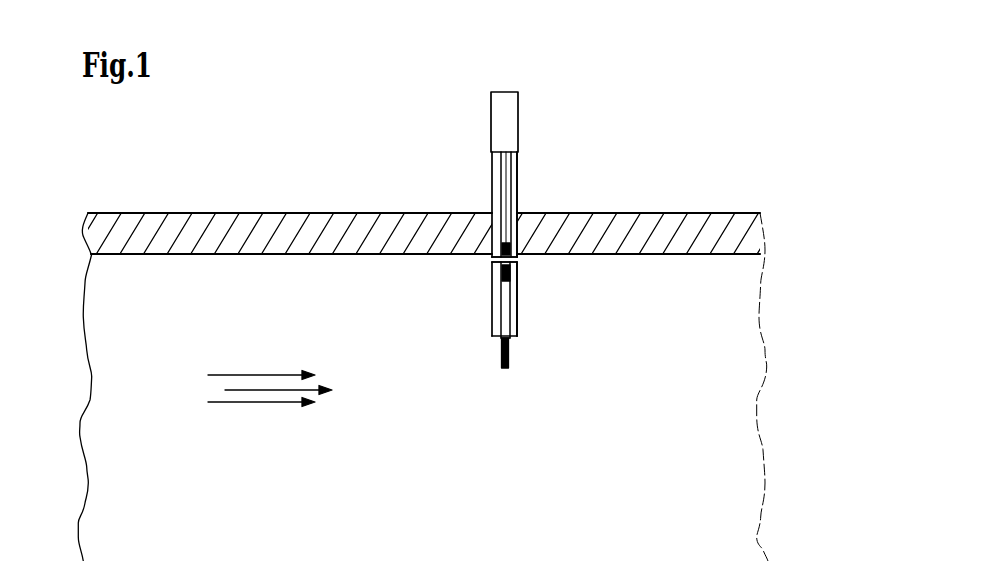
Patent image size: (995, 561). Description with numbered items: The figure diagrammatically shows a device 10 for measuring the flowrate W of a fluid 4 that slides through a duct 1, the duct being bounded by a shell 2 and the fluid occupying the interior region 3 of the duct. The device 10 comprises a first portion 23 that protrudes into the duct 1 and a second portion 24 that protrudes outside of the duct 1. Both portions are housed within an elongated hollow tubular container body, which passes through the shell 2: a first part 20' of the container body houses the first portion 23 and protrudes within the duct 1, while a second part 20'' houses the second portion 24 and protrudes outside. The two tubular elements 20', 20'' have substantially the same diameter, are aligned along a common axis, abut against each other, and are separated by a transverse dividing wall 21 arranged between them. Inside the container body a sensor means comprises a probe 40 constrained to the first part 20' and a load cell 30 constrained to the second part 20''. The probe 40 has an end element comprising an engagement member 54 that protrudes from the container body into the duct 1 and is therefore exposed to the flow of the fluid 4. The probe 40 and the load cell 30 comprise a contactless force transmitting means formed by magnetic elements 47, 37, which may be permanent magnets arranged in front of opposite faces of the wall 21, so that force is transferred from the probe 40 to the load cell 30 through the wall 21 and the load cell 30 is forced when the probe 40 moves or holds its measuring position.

The duct 1 is at (154, 203).
The shell 2 is at (228, 213).
The flow channel 3 is at (56, 560).
The fluid 4 is at (262, 373).
The device 10 is at (459, 123).
The second part of hollow elongated container body 20'' is at (477, 201).
The first part of hollow elongated container body 20' is at (555, 306).
The transverse dividing wall 21 is at (523, 273).
The first portion 23 is at (469, 294).
The second portion 24 is at (536, 196).
The load cell 30 is at (512, 166).
The magnetic element 37 is at (492, 259).
The probe 40 is at (490, 319).
The magnetic element 47 is at (500, 273).
The engagement member 54 is at (508, 361).